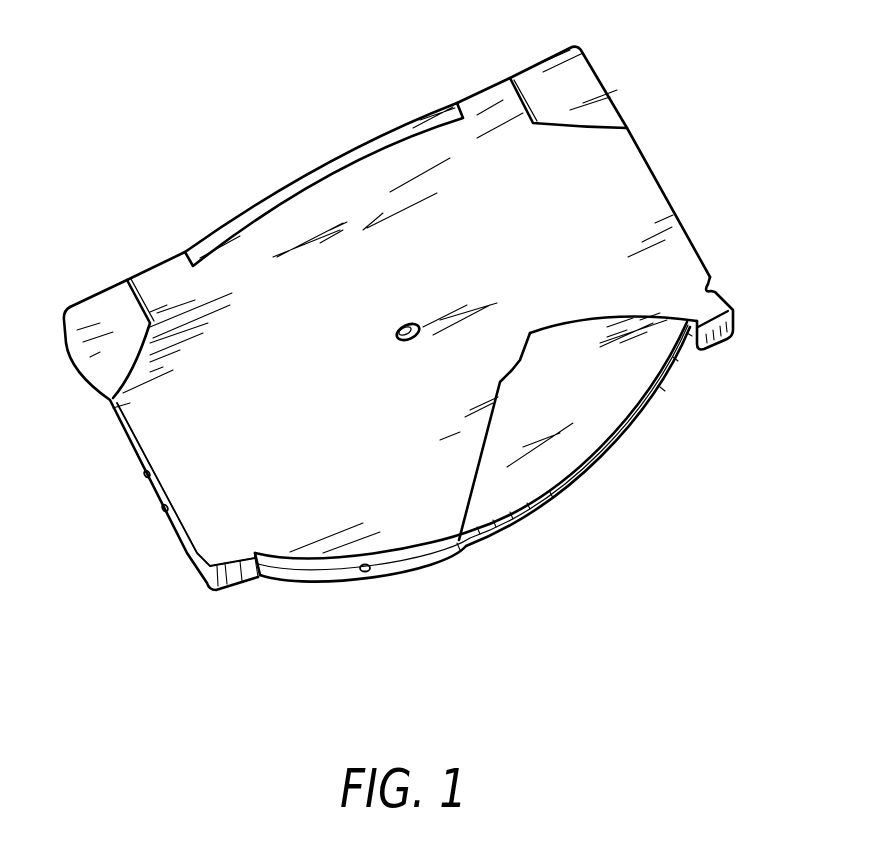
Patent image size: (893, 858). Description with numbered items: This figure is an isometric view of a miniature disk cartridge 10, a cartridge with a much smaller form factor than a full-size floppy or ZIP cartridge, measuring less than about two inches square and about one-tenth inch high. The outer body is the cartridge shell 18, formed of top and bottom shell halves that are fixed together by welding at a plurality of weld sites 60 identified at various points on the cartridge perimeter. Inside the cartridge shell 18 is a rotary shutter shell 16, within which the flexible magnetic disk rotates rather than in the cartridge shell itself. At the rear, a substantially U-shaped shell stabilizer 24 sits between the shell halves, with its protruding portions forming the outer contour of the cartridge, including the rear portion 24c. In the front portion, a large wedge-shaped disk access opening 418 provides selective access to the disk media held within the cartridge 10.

The miniature disk cartridge 10 is at (516, 632).
The rotary shutter shell 16 is at (567, 452).
The cartridge shell 18 is at (222, 557).
The shell stabilizer 24 is at (535, 77).
The rear portion 24c is at (258, 200).
The weld sites 60 is at (165, 508).
The disk access opening 418 is at (682, 416).